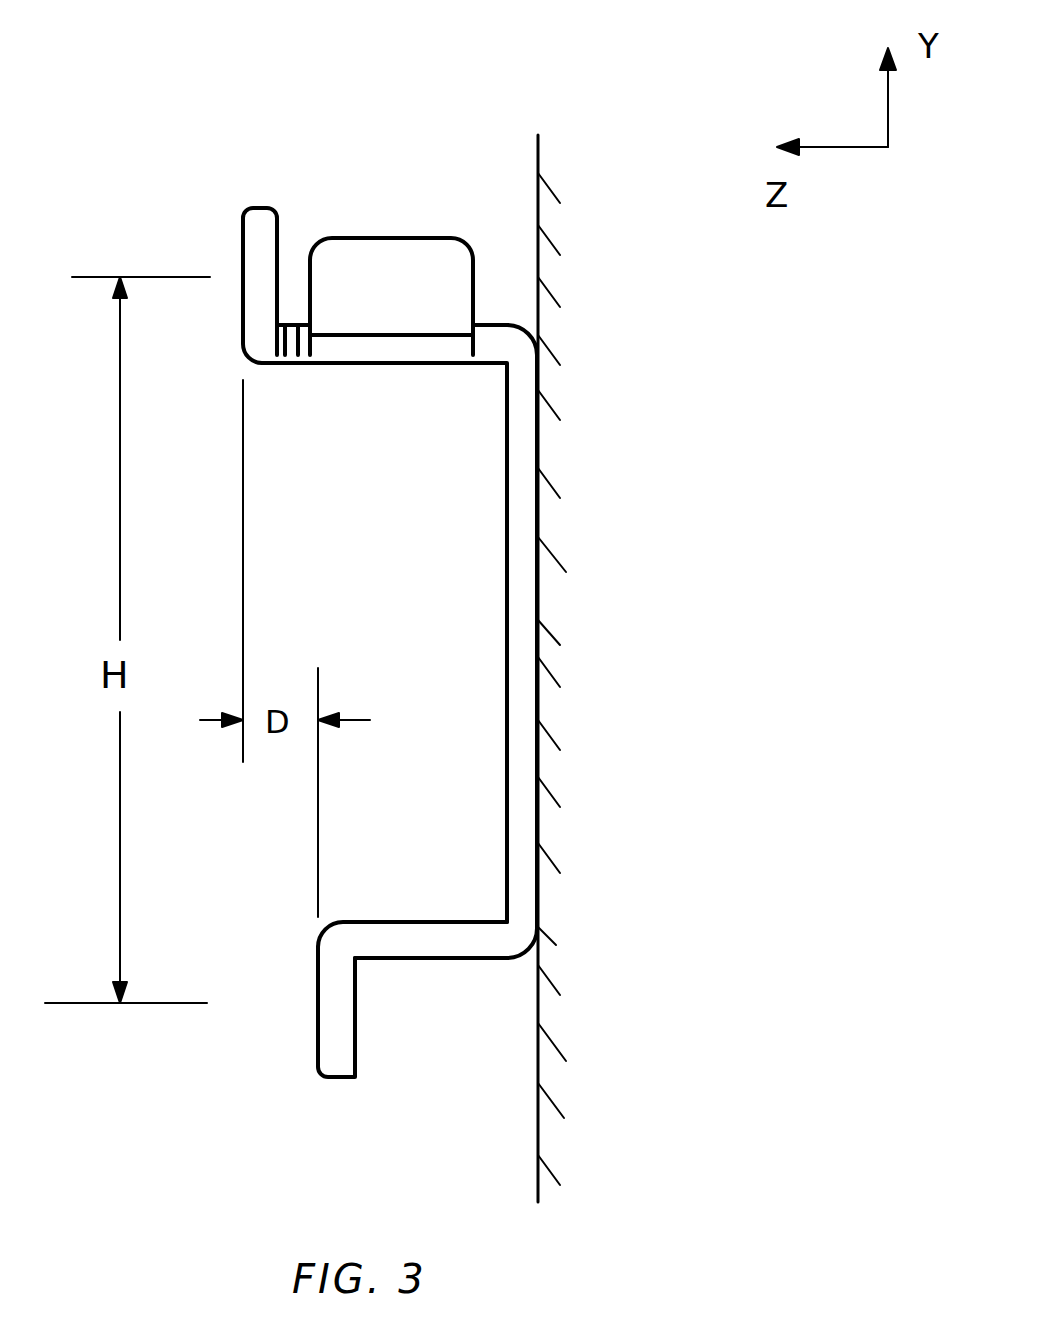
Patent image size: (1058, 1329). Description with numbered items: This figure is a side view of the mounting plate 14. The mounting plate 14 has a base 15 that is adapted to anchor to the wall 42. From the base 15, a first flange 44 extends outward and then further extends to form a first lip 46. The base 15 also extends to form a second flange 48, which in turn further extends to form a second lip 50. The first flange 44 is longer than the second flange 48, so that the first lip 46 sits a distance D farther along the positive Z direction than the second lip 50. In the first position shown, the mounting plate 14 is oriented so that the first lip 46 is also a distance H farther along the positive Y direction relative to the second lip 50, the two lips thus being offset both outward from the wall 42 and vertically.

The mounting plate 14 is at (640, 478).
The base 15 is at (527, 647).
The wall 42 is at (548, 1085).
The first flange 44 is at (488, 337).
The first lip 46 is at (263, 217).
The second flange 48 is at (403, 920).
The second lip 50 is at (328, 1037).